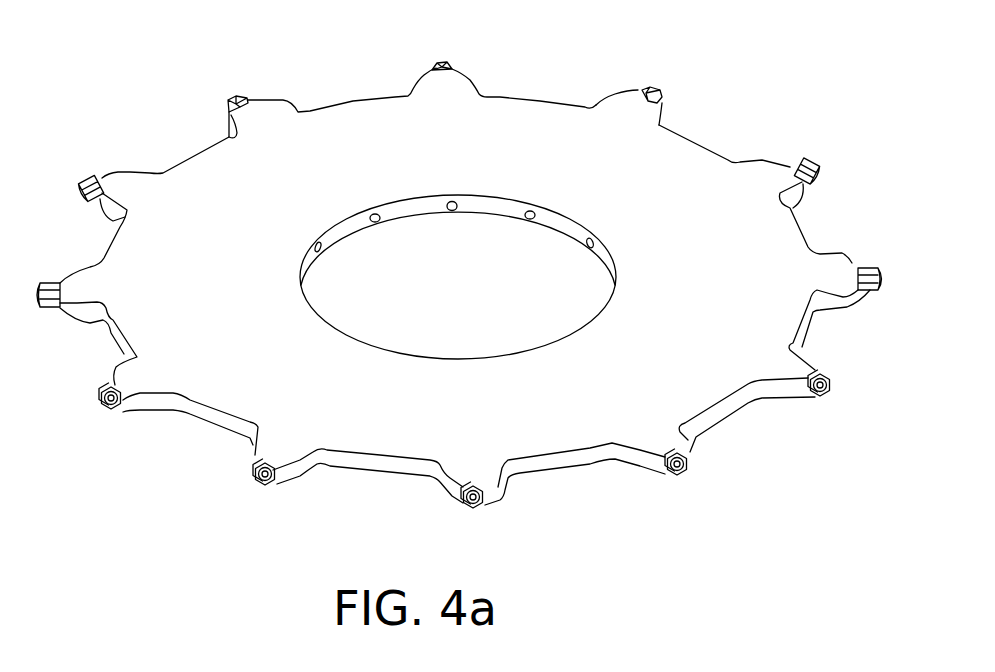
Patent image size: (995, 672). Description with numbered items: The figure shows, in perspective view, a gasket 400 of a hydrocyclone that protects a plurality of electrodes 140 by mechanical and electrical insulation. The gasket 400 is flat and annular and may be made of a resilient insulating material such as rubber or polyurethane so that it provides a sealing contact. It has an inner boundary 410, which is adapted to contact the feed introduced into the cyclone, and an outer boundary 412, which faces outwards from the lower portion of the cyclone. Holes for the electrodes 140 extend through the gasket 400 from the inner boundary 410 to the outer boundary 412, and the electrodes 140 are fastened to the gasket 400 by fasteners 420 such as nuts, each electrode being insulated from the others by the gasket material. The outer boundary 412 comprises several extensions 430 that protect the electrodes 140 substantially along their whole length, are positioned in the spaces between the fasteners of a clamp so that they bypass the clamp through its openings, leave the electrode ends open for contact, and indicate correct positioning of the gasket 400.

The gasket 400 is at (475, 279).
The inner boundary 410 is at (492, 216).
The outer boundary 412 is at (355, 100).
The fastener 420 is at (877, 295).
The extension 430 is at (606, 97).
The electrode 140 is at (320, 250).